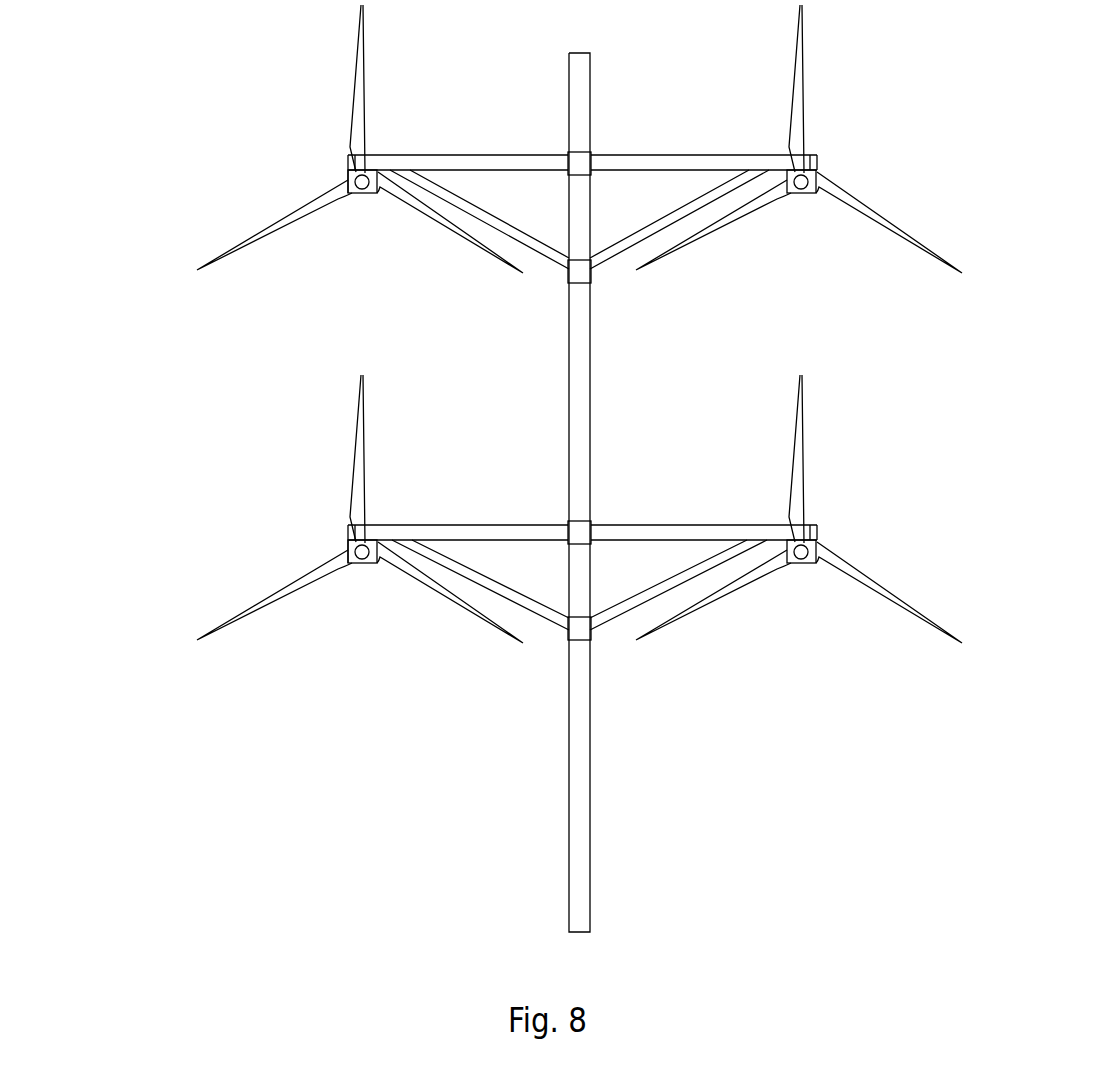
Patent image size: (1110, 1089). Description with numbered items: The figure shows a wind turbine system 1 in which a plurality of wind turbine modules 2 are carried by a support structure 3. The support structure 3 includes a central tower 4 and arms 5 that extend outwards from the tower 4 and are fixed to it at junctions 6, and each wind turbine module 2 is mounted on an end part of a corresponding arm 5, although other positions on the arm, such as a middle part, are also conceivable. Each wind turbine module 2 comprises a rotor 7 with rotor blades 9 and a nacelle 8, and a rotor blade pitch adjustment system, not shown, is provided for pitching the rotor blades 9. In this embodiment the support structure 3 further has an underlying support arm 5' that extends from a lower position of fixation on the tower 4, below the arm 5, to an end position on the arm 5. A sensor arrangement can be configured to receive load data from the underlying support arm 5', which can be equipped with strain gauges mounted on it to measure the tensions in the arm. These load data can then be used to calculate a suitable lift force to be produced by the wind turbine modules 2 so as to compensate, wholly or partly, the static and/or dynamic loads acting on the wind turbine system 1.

The wind turbine system 1 is at (182, 108).
The wind turbine module 2 is at (333, 242).
The support structure 3 is at (597, 353).
The tower 4 is at (565, 763).
The arm 5 is at (582, 359).
The underlying support arm 5' is at (579, 453).
The junction 6 is at (568, 152).
The rotor 7 is at (823, 168).
The nacelle 8 is at (813, 543).
The rotor blade 9 is at (807, 103).